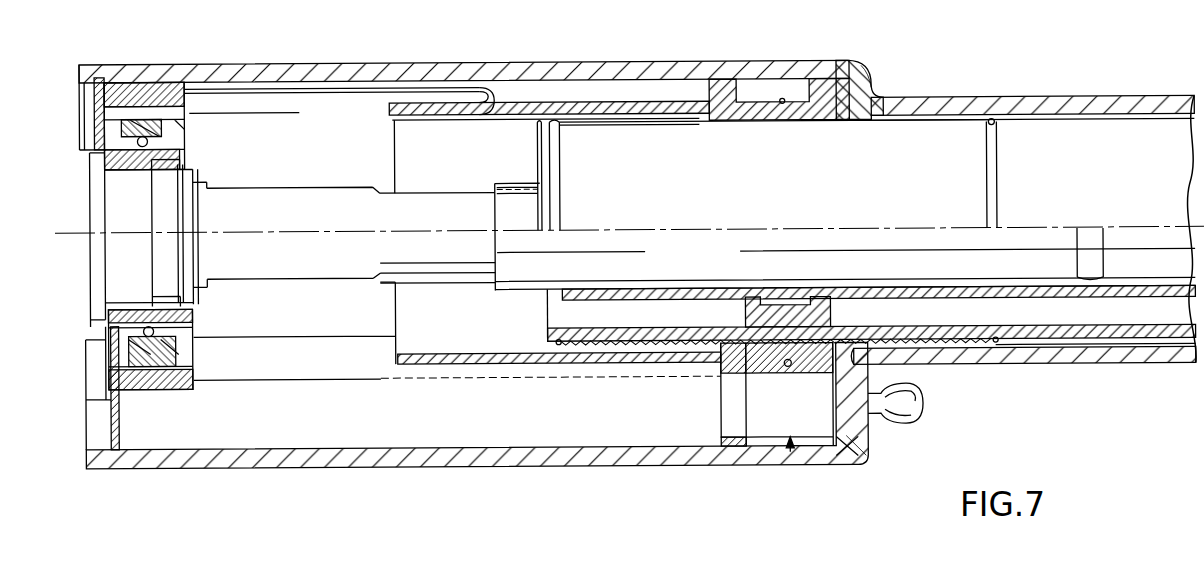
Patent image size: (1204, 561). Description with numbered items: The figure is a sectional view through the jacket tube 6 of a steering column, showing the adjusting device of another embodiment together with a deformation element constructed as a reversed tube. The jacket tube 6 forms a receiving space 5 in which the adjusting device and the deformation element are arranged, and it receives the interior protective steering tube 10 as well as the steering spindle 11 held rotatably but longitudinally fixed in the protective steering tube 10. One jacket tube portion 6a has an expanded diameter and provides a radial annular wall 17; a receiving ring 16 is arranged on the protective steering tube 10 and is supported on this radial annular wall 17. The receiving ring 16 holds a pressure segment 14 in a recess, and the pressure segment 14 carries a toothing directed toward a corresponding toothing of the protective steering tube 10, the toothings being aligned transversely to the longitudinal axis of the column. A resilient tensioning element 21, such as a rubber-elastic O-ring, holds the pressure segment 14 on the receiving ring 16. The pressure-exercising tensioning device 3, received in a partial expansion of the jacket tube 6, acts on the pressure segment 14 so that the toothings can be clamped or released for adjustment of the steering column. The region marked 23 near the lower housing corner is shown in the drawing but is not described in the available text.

The tensioning device 3 is at (789, 458).
The receiving space 5 is at (273, 340).
The jacket tube 6 is at (1100, 110).
The jacket tube portion 6a is at (224, 78).
The protective steering tube 10 is at (1098, 346).
The steering spindle 11 is at (1167, 304).
The pressure segment 14 is at (752, 379).
The receiving ring 16 is at (817, 112).
The radial annular wall 17 is at (874, 80).
The resilient tensioning element 21 is at (781, 103).
The housing corner 23 is at (868, 454).